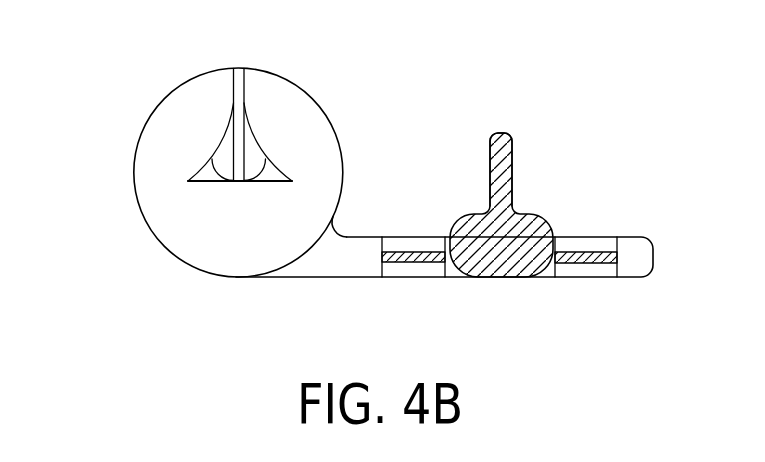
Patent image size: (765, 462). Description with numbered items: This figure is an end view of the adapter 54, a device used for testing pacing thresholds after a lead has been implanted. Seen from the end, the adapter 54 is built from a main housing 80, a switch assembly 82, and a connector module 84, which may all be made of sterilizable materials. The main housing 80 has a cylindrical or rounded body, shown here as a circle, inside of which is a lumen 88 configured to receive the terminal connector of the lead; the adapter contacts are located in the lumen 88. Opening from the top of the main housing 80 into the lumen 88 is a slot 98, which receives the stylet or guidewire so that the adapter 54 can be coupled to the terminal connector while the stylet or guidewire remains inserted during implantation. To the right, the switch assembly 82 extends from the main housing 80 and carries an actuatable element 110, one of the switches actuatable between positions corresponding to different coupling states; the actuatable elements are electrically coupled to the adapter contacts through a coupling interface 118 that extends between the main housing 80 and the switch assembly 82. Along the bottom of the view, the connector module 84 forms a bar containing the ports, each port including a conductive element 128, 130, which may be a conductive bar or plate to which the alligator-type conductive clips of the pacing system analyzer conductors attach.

The adapter 54 is at (211, 147).
The main housing 80 is at (292, 108).
The slot 98 is at (238, 70).
The lumen 88 is at (262, 176).
The coupling interface 118 is at (342, 247).
The conductive element 128 is at (418, 262).
The conductive element 130 is at (596, 250).
The actuatable element 110 is at (496, 133).
The switch assembly 82 is at (547, 182).
The connector module 84 is at (457, 279).